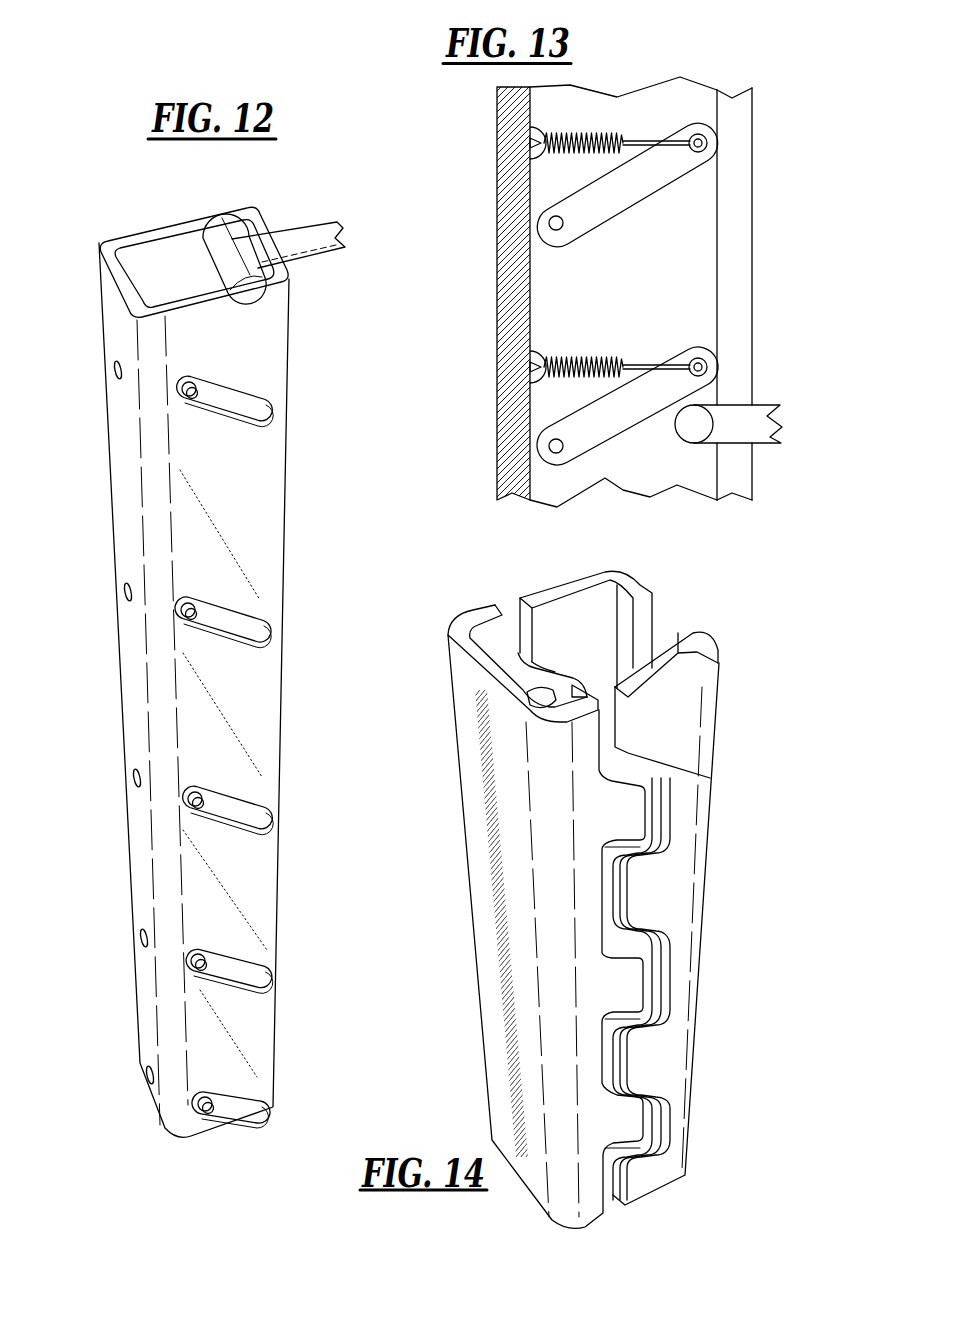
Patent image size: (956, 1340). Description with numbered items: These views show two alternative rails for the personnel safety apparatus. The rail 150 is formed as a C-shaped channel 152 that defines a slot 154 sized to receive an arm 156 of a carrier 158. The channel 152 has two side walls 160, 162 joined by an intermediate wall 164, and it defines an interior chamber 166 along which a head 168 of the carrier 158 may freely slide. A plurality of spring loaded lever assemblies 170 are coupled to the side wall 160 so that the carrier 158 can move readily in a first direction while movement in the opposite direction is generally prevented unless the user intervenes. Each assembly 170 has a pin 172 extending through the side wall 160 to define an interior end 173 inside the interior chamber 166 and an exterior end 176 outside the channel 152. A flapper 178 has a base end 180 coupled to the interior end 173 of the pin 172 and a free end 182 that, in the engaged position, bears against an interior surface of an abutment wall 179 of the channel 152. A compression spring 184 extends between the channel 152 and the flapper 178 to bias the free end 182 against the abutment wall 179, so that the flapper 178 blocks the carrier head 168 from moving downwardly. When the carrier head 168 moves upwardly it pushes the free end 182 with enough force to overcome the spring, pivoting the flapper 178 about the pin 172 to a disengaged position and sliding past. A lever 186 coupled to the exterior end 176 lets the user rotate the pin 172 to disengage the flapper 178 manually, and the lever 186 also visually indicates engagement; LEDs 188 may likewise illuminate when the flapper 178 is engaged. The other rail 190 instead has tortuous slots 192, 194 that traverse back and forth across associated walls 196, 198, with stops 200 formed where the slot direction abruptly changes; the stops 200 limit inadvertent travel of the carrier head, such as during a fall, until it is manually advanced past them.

In FIG. 12, the rail 150 is at (127, 196).
In FIG. 13, the rail 150 is at (698, 52).
In FIG. 12, the C-shaped channel 152 is at (136, 988).
In FIG. 12, the slot 154 is at (255, 228).
In FIG. 12, the arm 156 is at (308, 258).
In FIG. 13, the arm 156 is at (766, 411).
In FIG. 12, the carrier 158 is at (350, 232).
In FIG. 12, the side wall 160 is at (173, 226).
In FIG. 12, the side wall 162 is at (242, 302).
In FIG. 13, the side wall 162 is at (632, 458).
In FIG. 12, the intermediate wall 164 is at (112, 323).
In FIG. 13, the intermediate wall 164 is at (515, 415).
In FIG. 12, the interior chamber 166 is at (128, 252).
In FIG. 13, the interior chamber 166 is at (694, 264).
In FIG. 12, the head 168 is at (214, 240).
In FIG. 13, the head 168 is at (692, 430).
In FIG. 13, the spring loaded lever assembly 170 is at (550, 175).
In FIG. 13, the pin 172 is at (542, 243).
In FIG. 13, the interior end 173 is at (536, 221).
In FIG. 12, the exterior end 176 is at (200, 403).
In FIG. 13, the flapper 178 is at (652, 192).
In FIG. 12, the abutment wall 179 is at (289, 282).
In FIG. 13, the abutment wall 179 is at (720, 297).
In FIG. 13, the base end 180 is at (547, 212).
In FIG. 13, the free end 182 is at (708, 136).
In FIG. 13, the compression spring 184 is at (607, 133).
In FIG. 12, the lever 186 is at (271, 420).
In FIG. 12, the LED 188 is at (123, 592).
In FIG. 14, the rail 190 is at (446, 846).
In FIG. 14, the tortuous slot 192 is at (672, 803).
In FIG. 14, the tortuous slot 194 is at (512, 604).
In FIG. 14, the wall 196 is at (672, 693).
In FIG. 14, the wall 198 is at (472, 612).
In FIG. 14, the stop 200 is at (672, 773).